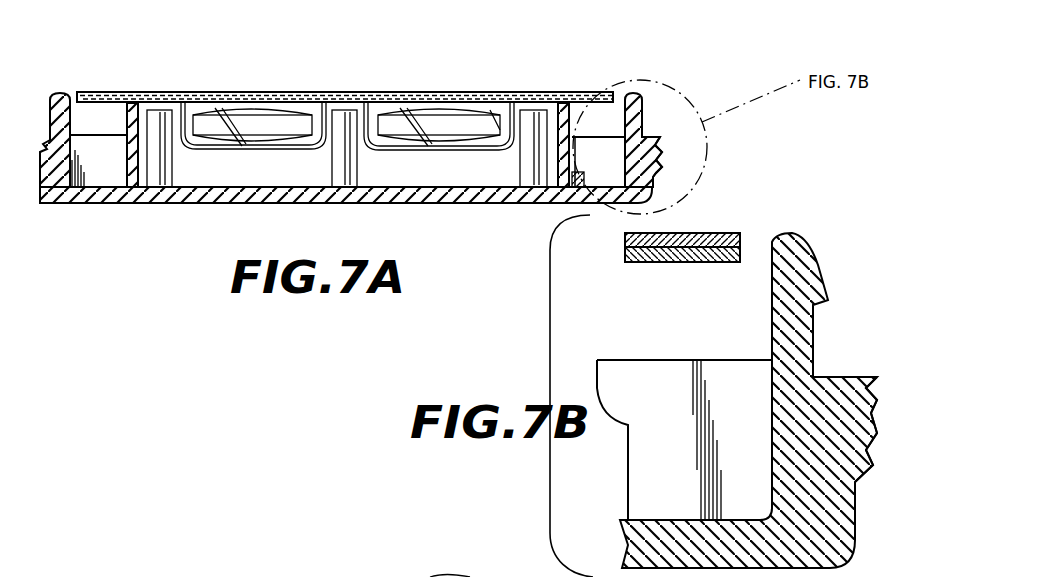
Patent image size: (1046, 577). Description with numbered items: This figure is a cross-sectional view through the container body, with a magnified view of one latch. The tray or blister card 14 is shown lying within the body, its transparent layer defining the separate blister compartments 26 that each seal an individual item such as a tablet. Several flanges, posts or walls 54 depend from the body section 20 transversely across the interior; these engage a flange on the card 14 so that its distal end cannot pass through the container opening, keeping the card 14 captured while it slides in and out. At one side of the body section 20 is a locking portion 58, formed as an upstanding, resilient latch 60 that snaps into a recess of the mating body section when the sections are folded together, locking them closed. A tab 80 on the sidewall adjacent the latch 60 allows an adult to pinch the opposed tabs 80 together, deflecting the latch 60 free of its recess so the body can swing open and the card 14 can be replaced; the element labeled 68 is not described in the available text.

In FIG. 7A, the tray 14 is at (418, 100).
In FIG. 7A, the body section 20 is at (485, 205).
In FIG. 7A, the blister compartment 26 is at (252, 118).
In FIG. 7A, the flange, post or wall 54 is at (160, 112).
In FIG. 7B, the locking portion 58 is at (848, 337).
In FIG. 7A, the latch 60 is at (648, 97).
In FIG. 7B, the latch 60 is at (827, 298).
In FIG. 7B, the bottom wall 68 is at (495, 576).
In FIG. 7A, the tab 80 is at (668, 150).
In FIG. 7B, the tab 80 is at (876, 414).